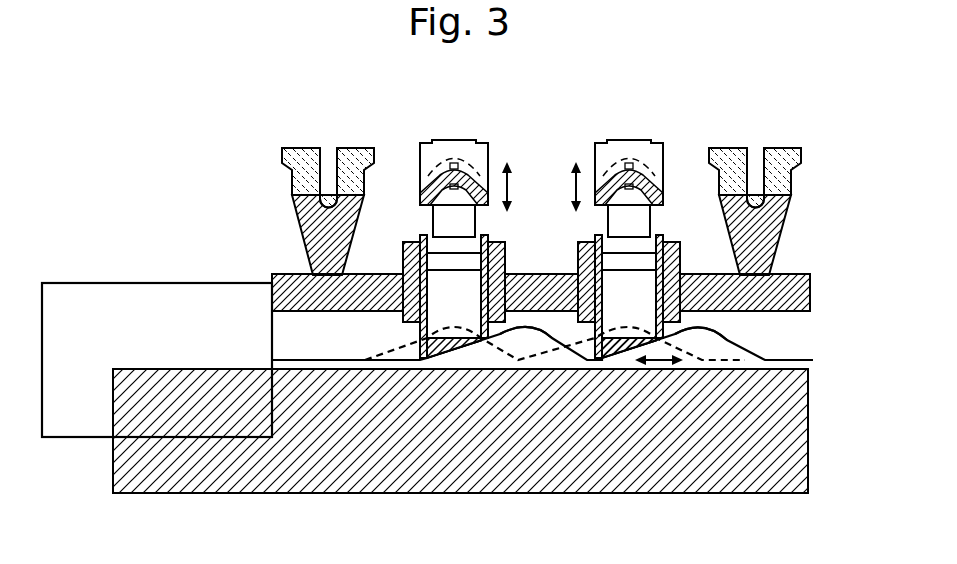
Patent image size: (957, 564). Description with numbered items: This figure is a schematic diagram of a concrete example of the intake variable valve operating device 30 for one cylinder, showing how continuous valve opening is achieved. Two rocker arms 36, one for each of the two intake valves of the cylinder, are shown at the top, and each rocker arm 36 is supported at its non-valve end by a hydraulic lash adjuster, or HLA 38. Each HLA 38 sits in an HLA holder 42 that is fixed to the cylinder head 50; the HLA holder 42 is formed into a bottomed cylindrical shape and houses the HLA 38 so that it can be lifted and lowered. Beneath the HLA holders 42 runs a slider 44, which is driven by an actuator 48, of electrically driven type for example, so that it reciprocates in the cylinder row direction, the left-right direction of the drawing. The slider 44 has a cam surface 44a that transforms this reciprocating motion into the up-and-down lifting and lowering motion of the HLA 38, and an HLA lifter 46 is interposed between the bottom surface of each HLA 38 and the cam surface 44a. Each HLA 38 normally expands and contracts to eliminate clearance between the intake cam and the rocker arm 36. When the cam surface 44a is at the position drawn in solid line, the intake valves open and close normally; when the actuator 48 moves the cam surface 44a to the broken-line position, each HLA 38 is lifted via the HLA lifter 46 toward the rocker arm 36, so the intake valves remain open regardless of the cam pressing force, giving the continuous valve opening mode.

The intake variable valve operating device 30 is at (135, 152).
The rocker arm 36 is at (463, 145).
The hydraulic lash adjuster 38 is at (447, 284).
The HLA holder 42 is at (420, 287).
The slider 44 is at (746, 336).
The cam surface 44a is at (503, 331).
The HLA lifter 46 is at (445, 346).
The actuator 48 is at (128, 283).
The cylinder head 50 is at (785, 432).